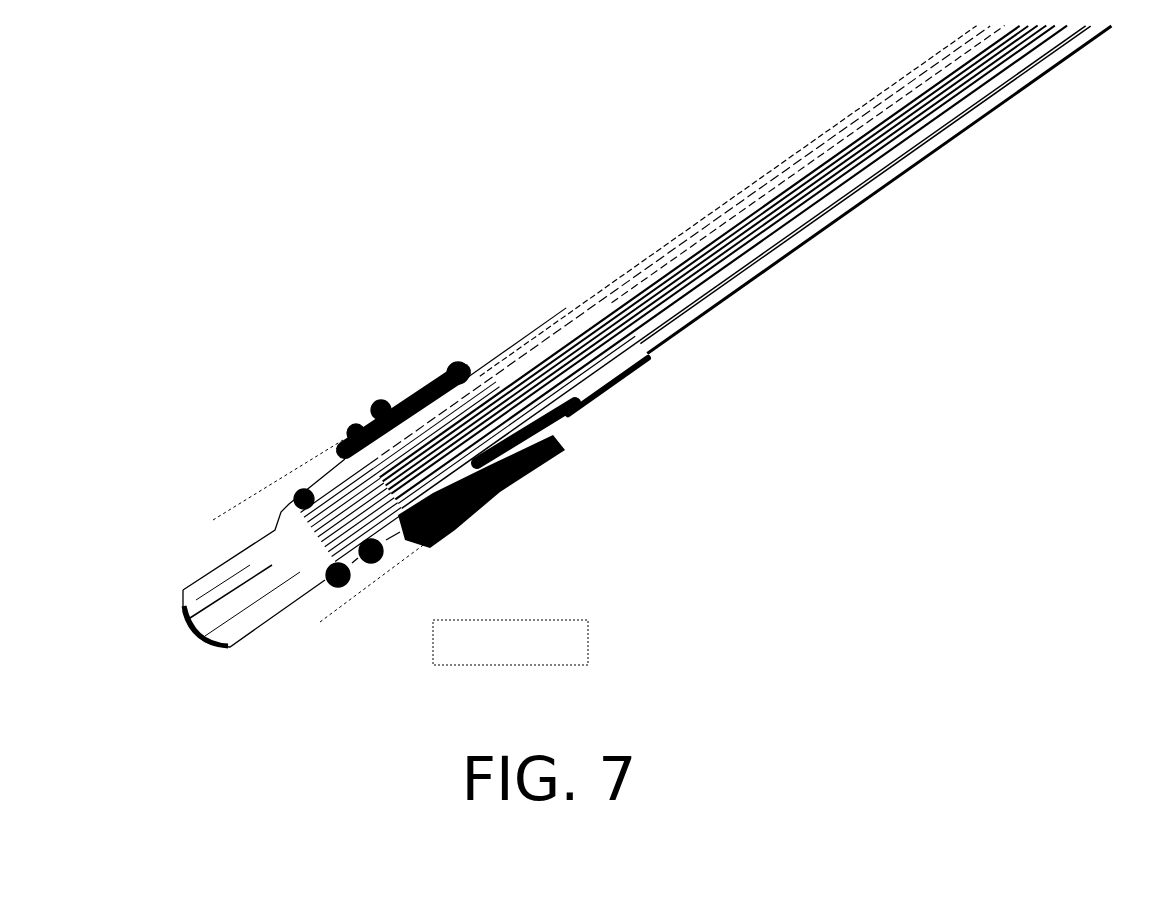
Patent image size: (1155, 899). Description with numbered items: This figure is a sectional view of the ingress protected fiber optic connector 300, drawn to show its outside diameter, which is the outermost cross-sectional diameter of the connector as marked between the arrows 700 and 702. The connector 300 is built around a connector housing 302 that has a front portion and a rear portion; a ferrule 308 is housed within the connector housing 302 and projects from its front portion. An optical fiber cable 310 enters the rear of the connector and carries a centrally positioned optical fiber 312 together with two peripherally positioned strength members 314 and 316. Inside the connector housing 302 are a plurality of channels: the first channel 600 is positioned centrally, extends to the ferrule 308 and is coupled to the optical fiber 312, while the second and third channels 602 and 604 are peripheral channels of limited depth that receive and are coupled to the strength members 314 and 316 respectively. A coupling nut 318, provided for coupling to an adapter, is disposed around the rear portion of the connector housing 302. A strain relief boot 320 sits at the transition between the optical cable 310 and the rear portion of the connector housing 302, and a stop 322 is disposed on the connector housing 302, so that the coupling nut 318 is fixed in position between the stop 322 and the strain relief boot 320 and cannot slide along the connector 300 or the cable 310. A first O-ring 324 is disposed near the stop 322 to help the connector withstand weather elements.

The fiber optic connector 300 is at (410, 238).
The connector housing 302 is at (383, 520).
The ferrule 308 is at (207, 613).
The optical fiber cable 310 is at (907, 177).
The optical fiber 312 is at (835, 180).
The strength member 314 is at (757, 200).
The strength member 316 is at (807, 223).
The coupling nut 318 is at (455, 365).
The strain relief boot 320 is at (497, 353).
The stop 322 is at (317, 487).
The first O-ring 324 is at (298, 493).
The first channel 600 is at (335, 518).
The second channel 602 is at (360, 467).
The third channel 604 is at (480, 510).
The arrow 700 is at (240, 502).
The arrow 702 is at (347, 600).